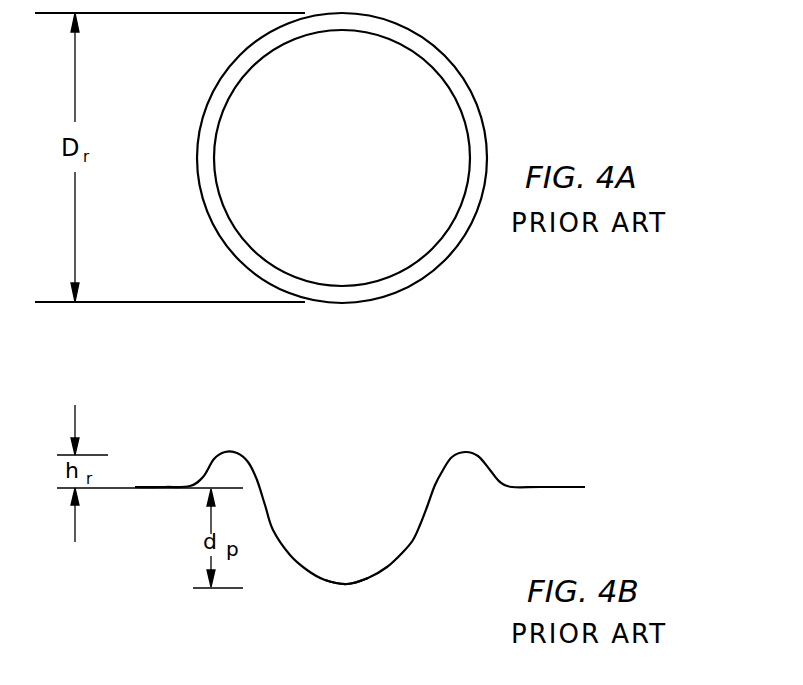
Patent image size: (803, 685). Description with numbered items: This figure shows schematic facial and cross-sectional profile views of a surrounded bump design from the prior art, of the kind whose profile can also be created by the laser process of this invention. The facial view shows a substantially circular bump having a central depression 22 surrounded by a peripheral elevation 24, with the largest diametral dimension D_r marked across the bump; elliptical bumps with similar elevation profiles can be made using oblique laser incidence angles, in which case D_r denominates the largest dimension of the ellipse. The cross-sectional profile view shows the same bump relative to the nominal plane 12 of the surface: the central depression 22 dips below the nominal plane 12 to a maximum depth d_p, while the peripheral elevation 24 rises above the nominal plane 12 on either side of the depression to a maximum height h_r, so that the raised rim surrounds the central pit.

In FIG. 4B, the nominal plane 12 is at (528, 488).
In FIG. 4A, the central depression 22 is at (367, 166).
In FIG. 4B, the central depression 22 is at (343, 584).
In FIG. 4A, the peripheral elevation 24 is at (440, 251).